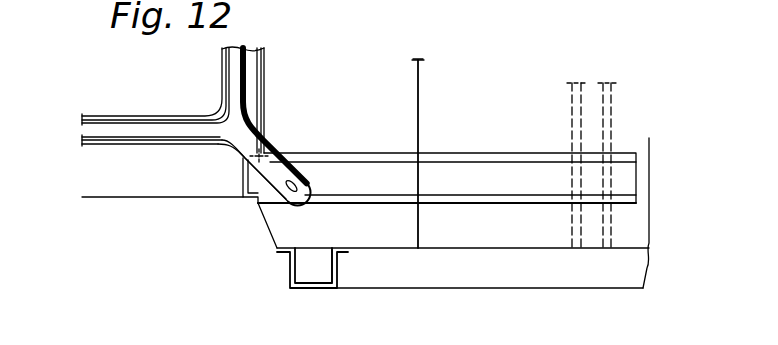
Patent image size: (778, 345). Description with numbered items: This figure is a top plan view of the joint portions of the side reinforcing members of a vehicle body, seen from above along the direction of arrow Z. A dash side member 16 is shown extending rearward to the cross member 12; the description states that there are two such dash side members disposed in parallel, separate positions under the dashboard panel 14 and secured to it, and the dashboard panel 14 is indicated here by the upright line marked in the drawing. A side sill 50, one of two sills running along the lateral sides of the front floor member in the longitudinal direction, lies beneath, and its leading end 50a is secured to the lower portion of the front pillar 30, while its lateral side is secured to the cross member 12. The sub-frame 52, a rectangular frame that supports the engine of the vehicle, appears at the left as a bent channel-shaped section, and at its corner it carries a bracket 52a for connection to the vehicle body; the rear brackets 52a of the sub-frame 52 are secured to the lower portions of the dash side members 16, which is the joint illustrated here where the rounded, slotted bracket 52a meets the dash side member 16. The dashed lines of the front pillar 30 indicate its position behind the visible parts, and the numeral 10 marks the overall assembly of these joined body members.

The frame assembly 10 is at (425, 68).
The cross member 12 is at (597, 105).
The dashboard panel 14 is at (413, 72).
The dash side member 16 is at (368, 168).
The front pillar 30 is at (310, 293).
The side sill 50 is at (495, 274).
The leading end 50a is at (336, 266).
The sub-frame 52 is at (145, 116).
The bracket 52a is at (279, 163).